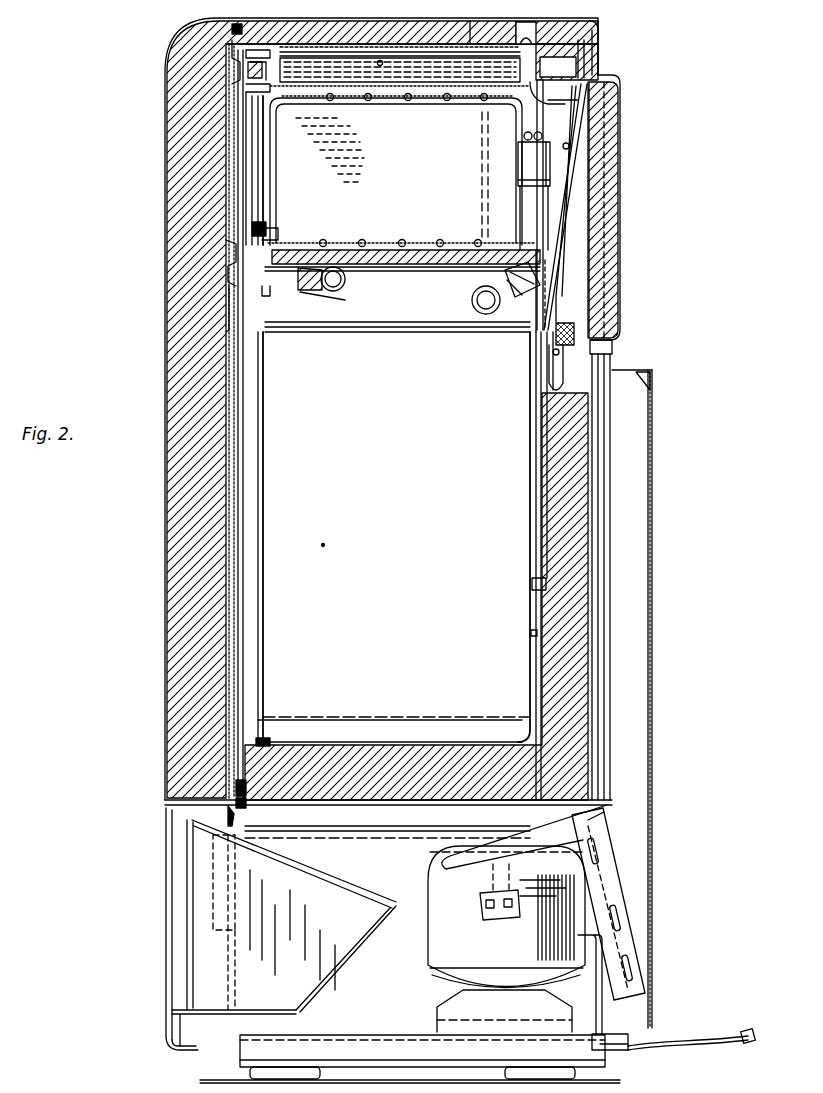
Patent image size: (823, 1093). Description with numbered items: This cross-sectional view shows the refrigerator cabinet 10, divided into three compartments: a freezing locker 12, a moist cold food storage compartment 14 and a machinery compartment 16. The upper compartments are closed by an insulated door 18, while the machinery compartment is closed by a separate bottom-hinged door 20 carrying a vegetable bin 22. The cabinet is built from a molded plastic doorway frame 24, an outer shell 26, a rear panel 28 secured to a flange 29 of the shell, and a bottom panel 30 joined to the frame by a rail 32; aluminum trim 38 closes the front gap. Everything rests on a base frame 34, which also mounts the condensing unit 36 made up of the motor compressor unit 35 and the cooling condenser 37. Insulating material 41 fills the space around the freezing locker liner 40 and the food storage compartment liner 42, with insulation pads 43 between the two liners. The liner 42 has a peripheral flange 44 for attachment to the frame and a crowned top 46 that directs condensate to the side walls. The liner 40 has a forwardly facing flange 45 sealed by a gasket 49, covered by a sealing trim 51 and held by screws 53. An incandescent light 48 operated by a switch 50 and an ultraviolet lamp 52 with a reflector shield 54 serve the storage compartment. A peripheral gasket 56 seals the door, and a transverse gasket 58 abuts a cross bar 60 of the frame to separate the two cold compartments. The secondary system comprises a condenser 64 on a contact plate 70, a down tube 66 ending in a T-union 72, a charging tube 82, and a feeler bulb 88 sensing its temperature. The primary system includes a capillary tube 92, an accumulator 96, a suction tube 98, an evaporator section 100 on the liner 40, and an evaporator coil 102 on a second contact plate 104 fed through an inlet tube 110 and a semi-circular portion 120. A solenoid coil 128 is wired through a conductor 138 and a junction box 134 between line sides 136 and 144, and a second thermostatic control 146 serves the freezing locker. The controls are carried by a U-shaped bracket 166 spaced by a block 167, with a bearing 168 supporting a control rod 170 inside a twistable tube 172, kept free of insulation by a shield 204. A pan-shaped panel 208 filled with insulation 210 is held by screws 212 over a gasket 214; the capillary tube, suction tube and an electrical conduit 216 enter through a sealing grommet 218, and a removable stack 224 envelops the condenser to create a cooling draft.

The cabinet 10 is at (156, 370).
The freezing locker 12 is at (392, 165).
The food storage compartment 14 is at (408, 480).
The machinery compartment 16 is at (400, 995).
The insulated door 18 is at (182, 527).
The door 20 is at (164, 940).
The vegetable bin 22 is at (200, 893).
The doorway frame 24 is at (243, 472).
The outer shell 26 is at (364, 20).
The rear panel 28 is at (598, 530).
The flange 29 is at (590, 48).
The bottom panel 30 is at (383, 801).
The rail 32 is at (226, 808).
The base frame 34 is at (346, 1058).
The motor compressor unit 35 is at (522, 957).
The condensing unit 36 is at (415, 937).
The cooling condenser 37 is at (626, 978).
The extruded aluminum trim 38 is at (233, 787).
The freezing locker liner 40 is at (285, 158).
The thermal insulating material 41 is at (458, 30).
The food storage compartment liner 42 is at (323, 545).
The insulation pads 43 is at (410, 268).
The peripheral flange 44 is at (265, 293).
The forwardly facing flange 45 is at (266, 234).
The crown 46 is at (405, 270).
The incandescent light 48 is at (484, 302).
The gasket 49 is at (262, 112).
The switch 50 is at (234, 60).
The sealing trim 51 is at (243, 120).
The ultraviolet sterilizing lamp 52 is at (333, 275).
The screws 53 is at (240, 88).
The reflector shield 54 is at (302, 297).
The peripheral sealing gasket 56 is at (235, 27).
The sealing gasket 58 is at (226, 262).
The cross bar 60 is at (232, 300).
The condenser 64 is at (540, 298).
The down tube 66 is at (546, 465).
The contact plate 70 is at (546, 318).
The T-union 72 is at (535, 584).
The charging tube 82 is at (546, 360).
The feeler bulb 88 is at (588, 131).
The capillary tube 92 is at (562, 306).
The accumulator 96 is at (524, 162).
The suction tube 98 is at (607, 808).
The evaporator section 100 is at (482, 148).
The evaporator coil 102 is at (560, 292).
The second contact plate 104 is at (540, 326).
The tube 110 is at (626, 371).
The semi-circular portion 120 is at (552, 385).
The solenoid coil 128 is at (590, 335).
The junction box 134 is at (486, 913).
The line side 136 is at (742, 1040).
The conductor 138 is at (568, 148).
The second line side 144 is at (750, 1030).
The second thermostatic control 146 is at (574, 66).
The U-shaped bracket 166 is at (596, 24).
The block 167 is at (540, 25).
The bearing 168 is at (525, 24).
The control rod 170 is at (373, 60).
The twistable tube 172 is at (362, 63).
The shield 204 is at (320, 24).
The pan-shaped panel 208 is at (620, 165).
The insulation 210 is at (606, 195).
The screws 212 is at (602, 76).
The sealing gasket 214 is at (620, 96).
The electrical conduit 216 is at (596, 700).
The sealing grommet 218 is at (613, 352).
The removable stack 224 is at (655, 445).